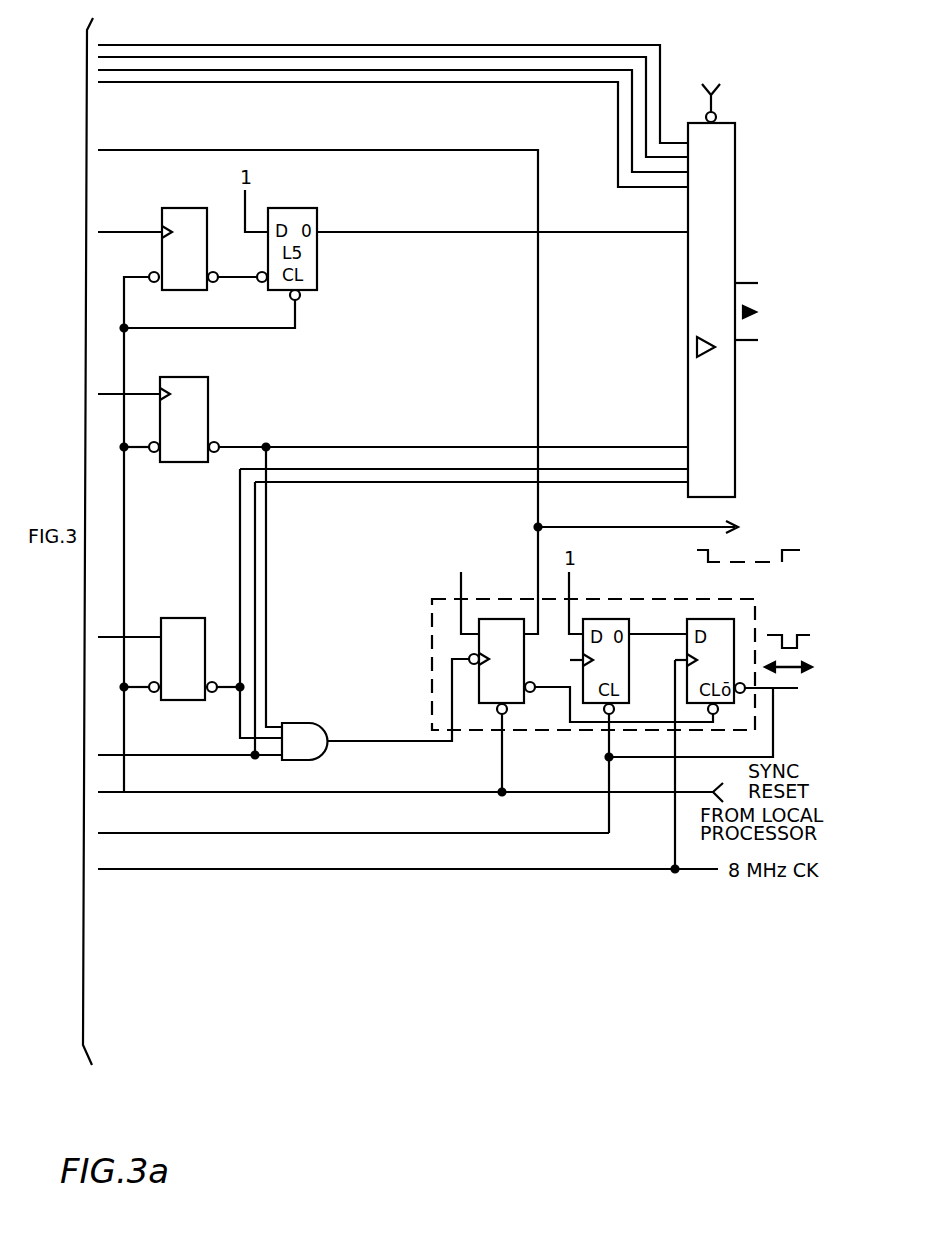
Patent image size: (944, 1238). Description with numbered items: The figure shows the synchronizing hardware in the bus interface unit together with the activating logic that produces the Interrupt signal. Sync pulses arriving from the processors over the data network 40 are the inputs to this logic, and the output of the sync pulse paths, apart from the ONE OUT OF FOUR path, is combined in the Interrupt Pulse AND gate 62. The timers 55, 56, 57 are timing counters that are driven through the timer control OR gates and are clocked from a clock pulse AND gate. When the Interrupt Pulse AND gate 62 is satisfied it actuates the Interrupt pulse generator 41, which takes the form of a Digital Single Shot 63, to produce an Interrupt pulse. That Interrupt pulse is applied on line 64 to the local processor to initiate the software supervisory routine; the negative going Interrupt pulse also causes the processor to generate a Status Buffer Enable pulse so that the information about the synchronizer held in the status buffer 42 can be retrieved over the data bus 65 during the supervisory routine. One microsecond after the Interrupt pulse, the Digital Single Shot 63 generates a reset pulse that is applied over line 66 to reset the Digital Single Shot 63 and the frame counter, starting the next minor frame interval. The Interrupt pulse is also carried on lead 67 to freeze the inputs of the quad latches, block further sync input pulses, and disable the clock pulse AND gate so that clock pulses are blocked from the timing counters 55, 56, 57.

The data network 40 is at (348, 36).
The Interrupt pulse generator 41 is at (637, 570).
The status buffer 42 is at (740, 208).
The timer 55 is at (211, 266).
The timer 56 is at (188, 465).
The timer 57 is at (176, 702).
The Interrupt Pulse AND gate 62 is at (303, 724).
The Digital Single Shot 63 is at (432, 649).
The Interrupt pulse line 64 is at (568, 527).
The data bus 65 is at (745, 282).
The reset pulse line 66 is at (775, 747).
The Interrupt pulse lead 67 is at (540, 354).